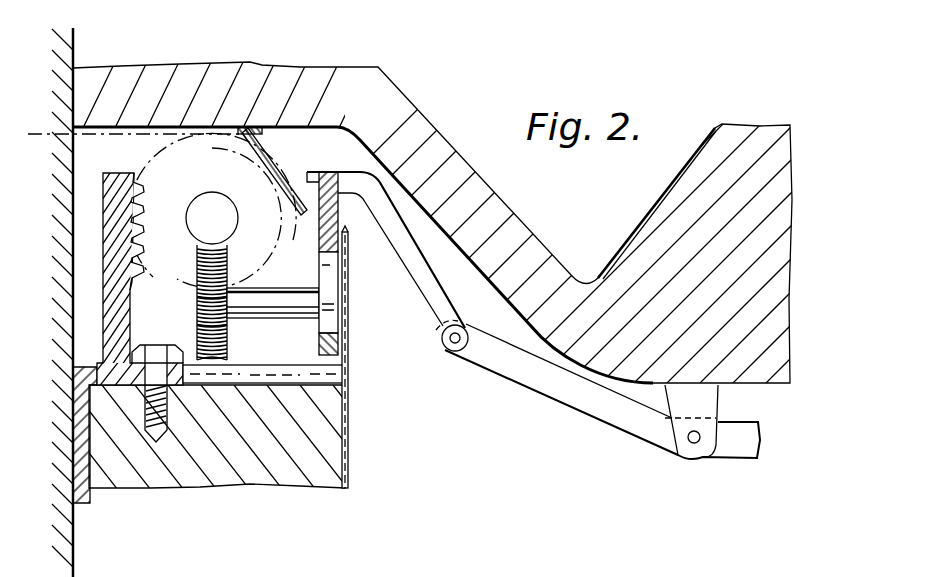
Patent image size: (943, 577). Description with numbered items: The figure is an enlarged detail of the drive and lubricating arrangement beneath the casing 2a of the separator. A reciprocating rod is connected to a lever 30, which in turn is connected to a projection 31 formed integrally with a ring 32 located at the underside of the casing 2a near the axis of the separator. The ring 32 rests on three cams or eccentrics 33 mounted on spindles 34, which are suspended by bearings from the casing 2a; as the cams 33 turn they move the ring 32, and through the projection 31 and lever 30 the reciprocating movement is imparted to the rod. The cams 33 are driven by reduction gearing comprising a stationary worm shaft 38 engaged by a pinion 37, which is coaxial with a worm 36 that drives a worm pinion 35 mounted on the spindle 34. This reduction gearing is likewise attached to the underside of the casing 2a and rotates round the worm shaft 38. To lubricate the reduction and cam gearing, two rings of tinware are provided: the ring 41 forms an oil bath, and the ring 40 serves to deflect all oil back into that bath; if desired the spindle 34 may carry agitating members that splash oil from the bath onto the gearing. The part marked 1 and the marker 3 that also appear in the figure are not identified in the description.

The wall 1 is at (73, 47).
The casing 2a is at (634, 231).
The section line 3 is at (35, 134).
The lever 30 is at (582, 403).
The projection 31 is at (407, 266).
The ring 32 is at (292, 237).
The cams or eccentrics 33 is at (327, 278).
The spindle 34 is at (295, 316).
The worm pinion 35 is at (226, 324).
The worm 36 is at (228, 213).
The pinion 37 is at (168, 172).
The worm shaft 38 is at (126, 304).
The ring 40 is at (283, 162).
The ring 41 is at (348, 373).